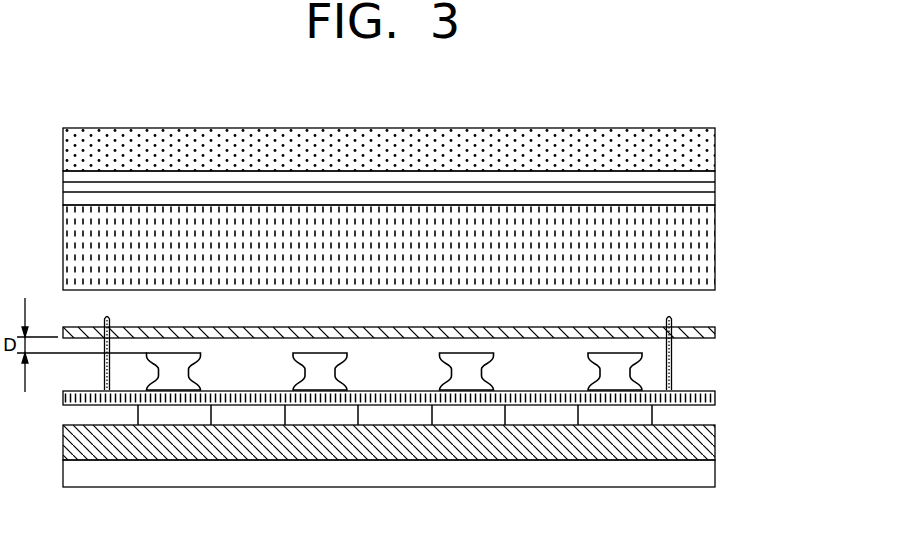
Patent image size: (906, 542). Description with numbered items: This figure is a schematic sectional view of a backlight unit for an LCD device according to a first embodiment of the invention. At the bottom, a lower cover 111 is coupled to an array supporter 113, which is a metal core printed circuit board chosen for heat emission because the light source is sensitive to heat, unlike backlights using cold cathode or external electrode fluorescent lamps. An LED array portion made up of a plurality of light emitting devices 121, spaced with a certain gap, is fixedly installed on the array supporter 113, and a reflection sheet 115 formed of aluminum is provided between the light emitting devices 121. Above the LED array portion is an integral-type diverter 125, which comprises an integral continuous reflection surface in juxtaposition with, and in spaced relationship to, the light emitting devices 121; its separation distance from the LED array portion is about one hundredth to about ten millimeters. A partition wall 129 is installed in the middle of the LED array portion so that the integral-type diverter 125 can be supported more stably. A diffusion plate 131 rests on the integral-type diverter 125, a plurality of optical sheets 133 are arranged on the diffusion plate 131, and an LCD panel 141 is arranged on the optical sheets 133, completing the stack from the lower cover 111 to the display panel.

The lower cover 111 is at (697, 480).
The array supporter 113 is at (700, 445).
The reflection sheet 115 is at (718, 398).
The light emitting devices 121 is at (640, 375).
The integral-type diverter 125 is at (692, 327).
The partition wall 129 is at (672, 360).
The diffusion plate 131 is at (700, 248).
The optical sheets 133 is at (723, 170).
The LCD panel 141 is at (700, 149).